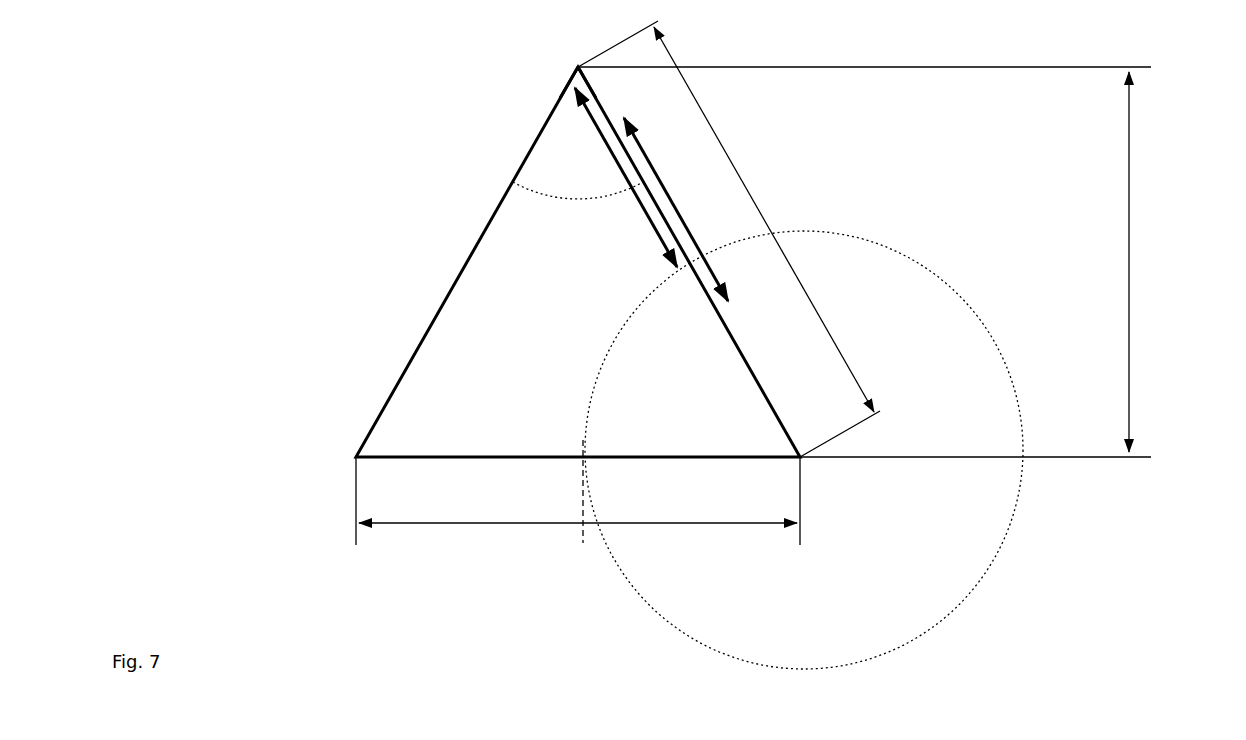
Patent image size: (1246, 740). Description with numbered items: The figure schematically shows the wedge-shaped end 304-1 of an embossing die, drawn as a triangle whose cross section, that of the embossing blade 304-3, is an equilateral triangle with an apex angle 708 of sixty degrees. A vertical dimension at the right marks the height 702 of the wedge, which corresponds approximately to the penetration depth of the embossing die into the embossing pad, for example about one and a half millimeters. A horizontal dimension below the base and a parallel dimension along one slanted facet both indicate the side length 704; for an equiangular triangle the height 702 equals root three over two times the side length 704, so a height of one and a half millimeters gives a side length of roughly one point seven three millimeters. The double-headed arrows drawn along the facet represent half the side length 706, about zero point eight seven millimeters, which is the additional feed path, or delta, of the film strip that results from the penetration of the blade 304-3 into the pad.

The wedge-shaped end of the embossing die 304-1 is at (372, 274).
The embossing blade 304-3 is at (575, 66).
The height 702 is at (1130, 165).
The side length 704 is at (752, 193).
The half the side length 706 is at (590, 108).
The angle 708 is at (545, 197).